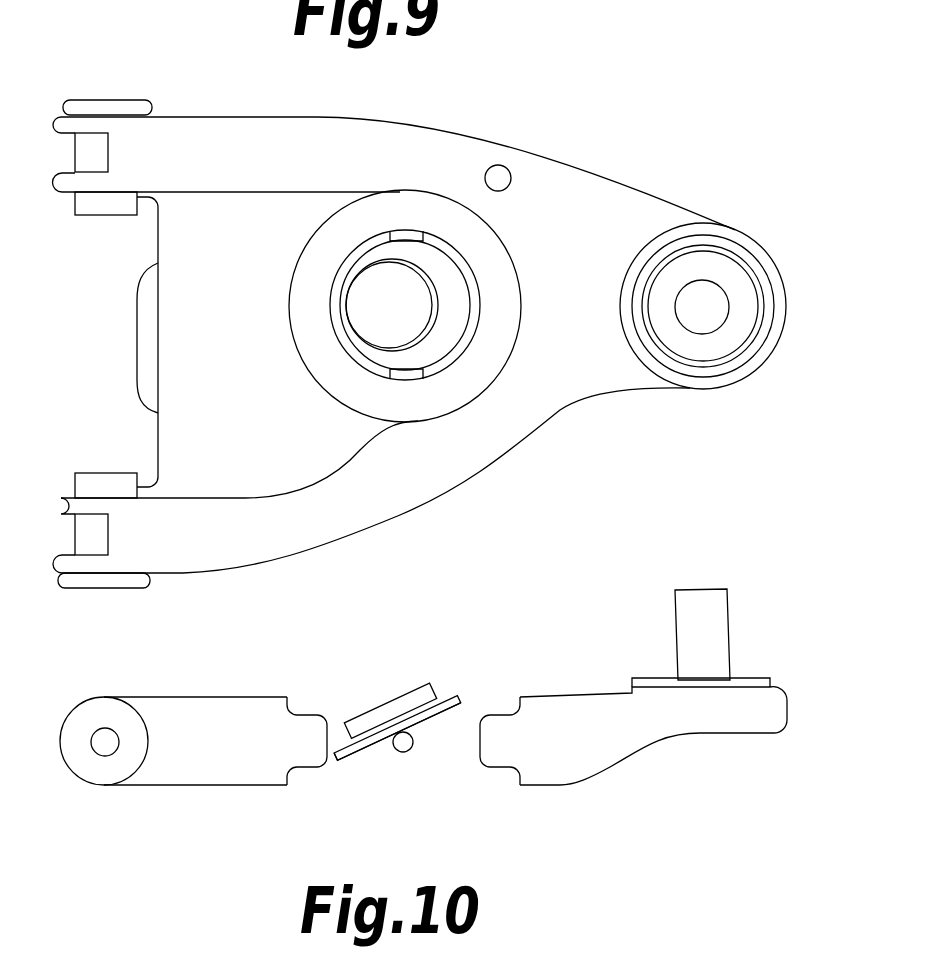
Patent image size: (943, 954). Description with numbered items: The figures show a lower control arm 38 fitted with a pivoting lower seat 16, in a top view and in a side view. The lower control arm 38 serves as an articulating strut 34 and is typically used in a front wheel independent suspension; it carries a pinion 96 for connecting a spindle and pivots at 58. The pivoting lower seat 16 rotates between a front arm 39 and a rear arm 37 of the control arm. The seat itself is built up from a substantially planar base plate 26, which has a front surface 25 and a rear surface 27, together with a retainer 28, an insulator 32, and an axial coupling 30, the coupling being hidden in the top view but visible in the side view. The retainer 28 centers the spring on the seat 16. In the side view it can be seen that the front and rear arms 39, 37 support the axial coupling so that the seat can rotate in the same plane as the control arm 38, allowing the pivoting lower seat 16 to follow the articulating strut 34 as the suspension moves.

In FIG. 9, the pivoting lower seat 16 is at (327, 393).
In FIG. 10, the front surface 25 is at (440, 700).
In FIG. 9, the planar base plate 26 is at (335, 242).
In FIG. 10, the planar base plate 26 is at (342, 755).
In FIG. 10, the rear surface 27 is at (428, 723).
In FIG. 9, the retainer 28 is at (385, 300).
In FIG. 10, the retainer 28 is at (367, 717).
In FIG. 10, the axial coupling 30 is at (398, 745).
In FIG. 9, the insulator 32 is at (352, 268).
In FIG. 9, the articulating strut 34 is at (575, 440).
In FIG. 10, the articulating strut 34 is at (641, 773).
In FIG. 9, the rear arm 37 is at (212, 133).
In FIG. 9, the lower control arm 38 is at (542, 190).
In FIG. 9, the front arm 39 is at (197, 553).
In FIG. 10, the front arm 39 is at (177, 768).
In FIG. 9, the pivot 58 is at (105, 472).
In FIG. 10, the pivot 58 is at (102, 747).
In FIG. 9, the pinion 96 is at (708, 307).
In FIG. 10, the pinion 96 is at (705, 627).